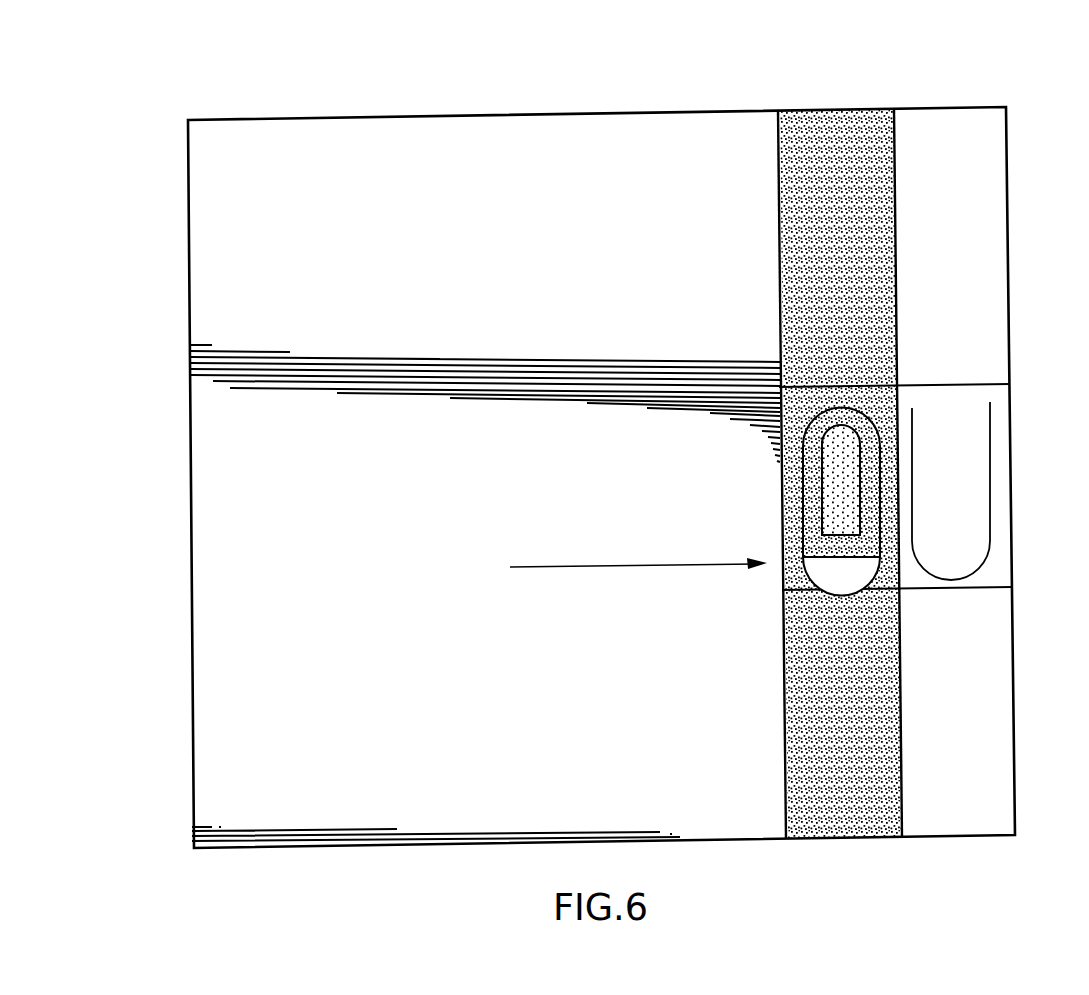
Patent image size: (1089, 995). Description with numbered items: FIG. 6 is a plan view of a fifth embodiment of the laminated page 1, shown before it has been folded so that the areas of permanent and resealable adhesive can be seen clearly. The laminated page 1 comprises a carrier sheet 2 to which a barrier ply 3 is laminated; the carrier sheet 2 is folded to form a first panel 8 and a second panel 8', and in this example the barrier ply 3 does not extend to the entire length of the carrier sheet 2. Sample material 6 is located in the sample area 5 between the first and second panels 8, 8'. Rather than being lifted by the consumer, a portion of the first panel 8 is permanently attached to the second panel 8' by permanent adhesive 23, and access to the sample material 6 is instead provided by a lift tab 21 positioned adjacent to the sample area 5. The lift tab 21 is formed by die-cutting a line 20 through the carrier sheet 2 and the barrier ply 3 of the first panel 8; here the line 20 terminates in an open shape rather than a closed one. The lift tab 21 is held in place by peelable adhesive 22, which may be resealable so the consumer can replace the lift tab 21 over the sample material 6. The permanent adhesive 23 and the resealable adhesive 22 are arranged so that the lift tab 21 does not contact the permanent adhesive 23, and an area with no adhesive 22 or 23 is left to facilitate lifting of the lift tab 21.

The laminated page 1 is at (136, 373).
The carrier sheet 2 is at (503, 845).
The barrier ply 3 is at (997, 410).
The sample area 5 is at (840, 436).
The sample material 6 is at (837, 520).
The first panel 8 is at (895, 316).
The second panel 8' is at (540, 321).
The line 20 is at (988, 498).
The lift tab 21 is at (972, 556).
The peelable adhesive 22 is at (866, 440).
The permanent adhesive 23 is at (835, 128).